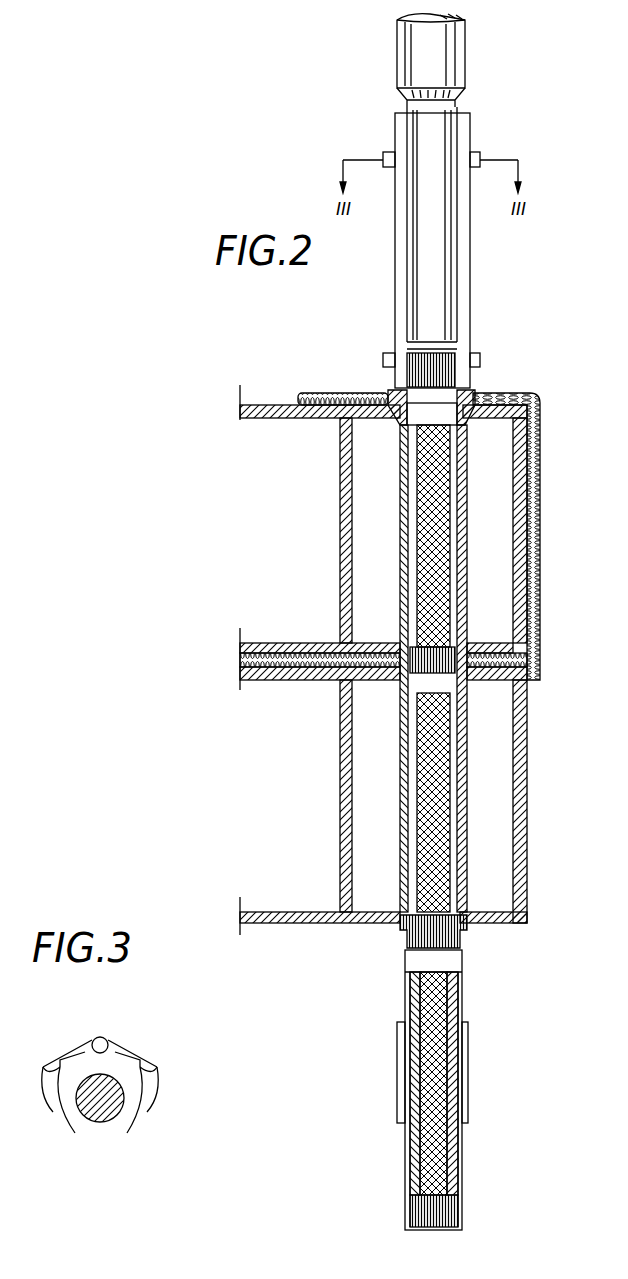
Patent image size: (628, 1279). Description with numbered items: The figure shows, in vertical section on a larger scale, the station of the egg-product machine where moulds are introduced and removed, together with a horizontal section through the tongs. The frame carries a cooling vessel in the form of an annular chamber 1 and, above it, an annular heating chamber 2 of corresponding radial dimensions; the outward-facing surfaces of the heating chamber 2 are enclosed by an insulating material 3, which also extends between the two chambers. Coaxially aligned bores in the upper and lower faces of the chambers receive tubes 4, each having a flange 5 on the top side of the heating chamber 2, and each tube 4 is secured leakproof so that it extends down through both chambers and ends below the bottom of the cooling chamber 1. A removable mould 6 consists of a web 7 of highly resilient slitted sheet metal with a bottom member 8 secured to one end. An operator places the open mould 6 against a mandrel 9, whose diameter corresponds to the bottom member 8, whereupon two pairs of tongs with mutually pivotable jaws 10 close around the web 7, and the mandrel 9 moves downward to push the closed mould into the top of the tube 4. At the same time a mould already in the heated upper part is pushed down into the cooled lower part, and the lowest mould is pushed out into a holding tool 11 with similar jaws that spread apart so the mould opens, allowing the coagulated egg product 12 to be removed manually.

In FIG. 2, the annular chamber 1 is at (503, 790).
In FIG. 2, the annular heating chamber 2 is at (503, 442).
In FIG. 2, the insulating material 3 is at (542, 395).
In FIG. 2, the tube 4 is at (460, 525).
In FIG. 2, the flange 5 is at (472, 392).
In FIG. 2, the mould 6 is at (463, 490).
In FIG. 2, the web 7 is at (465, 252).
In FIG. 3, the web 7 is at (63, 1125).
In FIG. 2, the bottom member 8 is at (437, 363).
In FIG. 3, the bottom member 8 is at (98, 1117).
In FIG. 2, the mandrel 9 is at (455, 67).
In FIG. 2, the jaws 10 is at (387, 157).
In FIG. 3, the jaws 10 is at (82, 1053).
In FIG. 2, the holding tool 11 is at (462, 1028).
In FIG. 2, the egg product 12 is at (435, 1170).